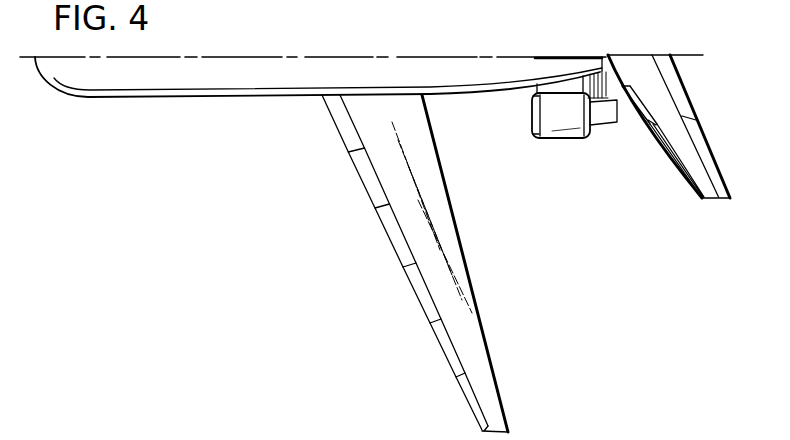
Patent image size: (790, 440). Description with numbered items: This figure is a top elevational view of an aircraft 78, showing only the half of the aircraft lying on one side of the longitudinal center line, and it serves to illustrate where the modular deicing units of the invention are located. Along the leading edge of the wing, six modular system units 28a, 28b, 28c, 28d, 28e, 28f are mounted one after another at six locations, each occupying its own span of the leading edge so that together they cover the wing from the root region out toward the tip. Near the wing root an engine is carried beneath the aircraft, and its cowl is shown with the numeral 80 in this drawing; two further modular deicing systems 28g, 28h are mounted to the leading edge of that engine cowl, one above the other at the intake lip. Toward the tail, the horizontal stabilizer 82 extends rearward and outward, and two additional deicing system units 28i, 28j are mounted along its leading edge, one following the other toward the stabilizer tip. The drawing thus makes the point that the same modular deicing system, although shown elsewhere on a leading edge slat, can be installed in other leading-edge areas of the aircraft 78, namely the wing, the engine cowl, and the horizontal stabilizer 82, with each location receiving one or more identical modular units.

The aircraft 78 is at (160, 104).
The engine nacelle 80 is at (546, 146).
The horizontal stabilizer 82 is at (667, 172).
The modular system unit 28a is at (338, 122).
The modular system unit 28b is at (358, 168).
The modular system unit 28c is at (385, 227).
The modular system unit 28d is at (412, 283).
The modular system unit 28e is at (437, 337).
The modular system unit 28f is at (462, 388).
The modular deicing system 28g is at (532, 100).
The modular deicing system 28h is at (532, 130).
The deicing system unit 28i is at (637, 110).
The deicing system unit 28j is at (660, 138).